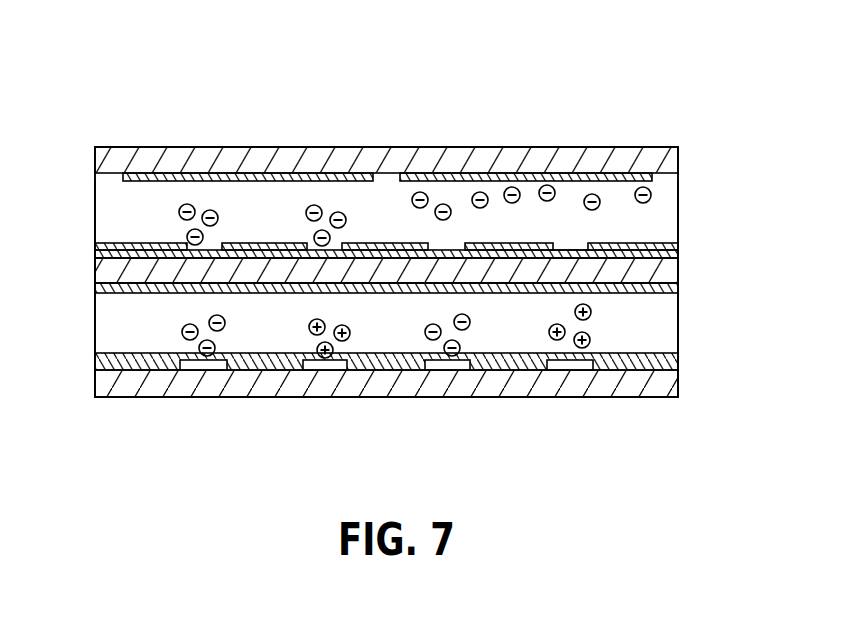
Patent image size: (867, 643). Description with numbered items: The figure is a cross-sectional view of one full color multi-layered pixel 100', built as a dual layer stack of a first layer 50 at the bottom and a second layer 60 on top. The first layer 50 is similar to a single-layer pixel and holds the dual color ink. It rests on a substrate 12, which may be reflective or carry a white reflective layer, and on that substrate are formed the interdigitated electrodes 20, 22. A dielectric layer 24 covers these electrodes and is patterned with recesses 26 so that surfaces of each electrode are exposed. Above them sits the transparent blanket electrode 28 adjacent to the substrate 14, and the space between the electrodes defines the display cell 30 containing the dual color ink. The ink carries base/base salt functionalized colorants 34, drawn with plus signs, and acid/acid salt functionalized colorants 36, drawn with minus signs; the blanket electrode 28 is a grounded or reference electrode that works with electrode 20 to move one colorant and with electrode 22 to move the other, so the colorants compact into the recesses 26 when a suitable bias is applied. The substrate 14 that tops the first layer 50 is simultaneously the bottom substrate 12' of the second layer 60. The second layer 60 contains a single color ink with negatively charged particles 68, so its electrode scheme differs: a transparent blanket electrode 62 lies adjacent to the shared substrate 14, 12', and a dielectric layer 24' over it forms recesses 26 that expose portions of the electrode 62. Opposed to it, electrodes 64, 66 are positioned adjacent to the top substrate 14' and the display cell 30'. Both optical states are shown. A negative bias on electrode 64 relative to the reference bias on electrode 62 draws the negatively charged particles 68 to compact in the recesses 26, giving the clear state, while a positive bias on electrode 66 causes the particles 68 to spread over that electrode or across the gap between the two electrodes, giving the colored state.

The full color multi-layered pixel 100' is at (401, 205).
The substrate 14' is at (412, 138).
The second layer 60 is at (82, 210).
The first layer 50 is at (82, 322).
The electrode 64 is at (320, 180).
The electrode 66 is at (582, 180).
The display cell 30' is at (429, 212).
The negatively charged particles 68 is at (209, 210).
The electrode 62 is at (266, 243).
The recesses 26 is at (573, 232).
The dielectric layer 24' is at (429, 242).
The substrate 14 is at (447, 275).
The substrate 12' is at (386, 270).
The blanket electrode 28 is at (670, 290).
The display cell 30 is at (428, 323).
The dielectric layer 24 is at (428, 364).
The electrode 20 is at (200, 370).
The electrode 22 is at (325, 370).
The substrate 12 is at (428, 394).
The acid/acid salt functionalized colorants 36 is at (209, 318).
The base/base salt functionalized colorants 34 is at (309, 328).